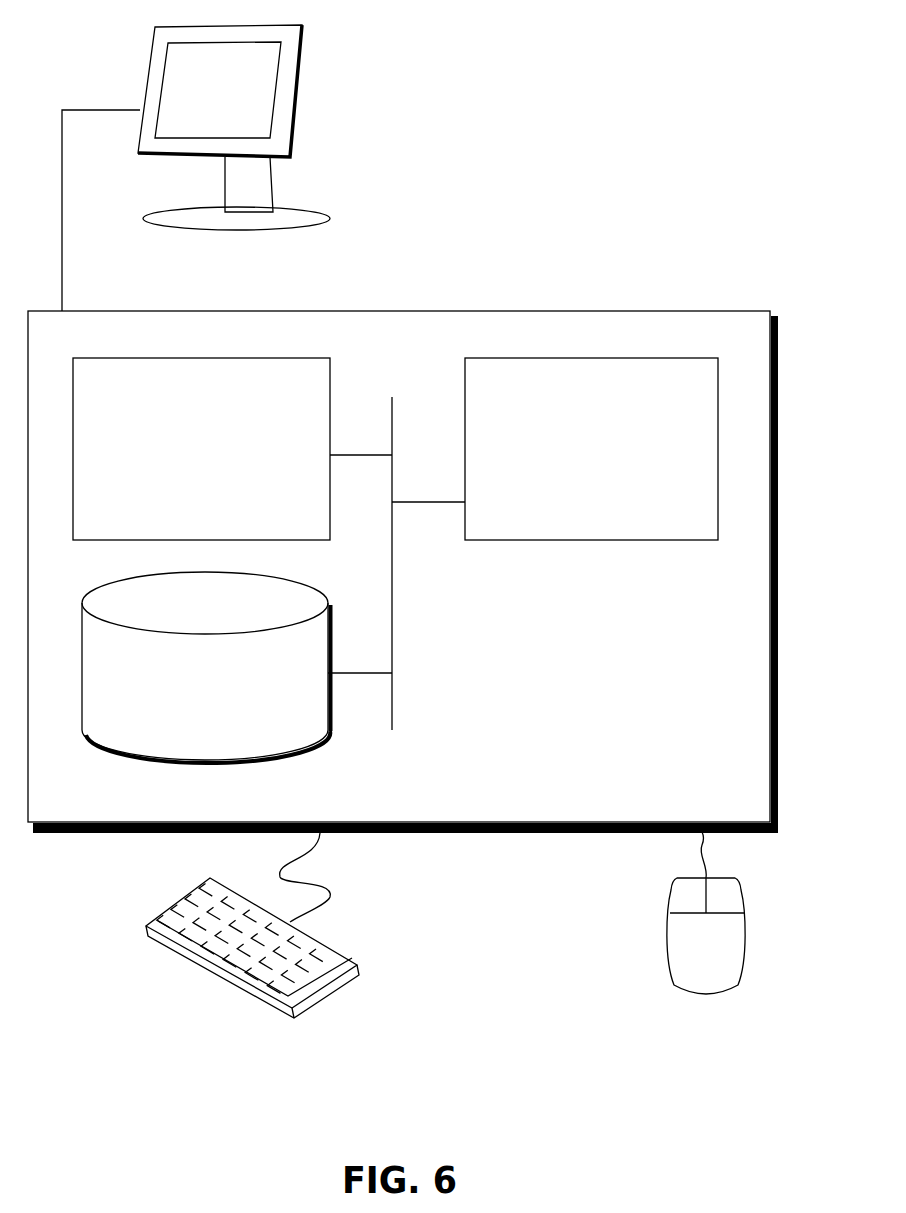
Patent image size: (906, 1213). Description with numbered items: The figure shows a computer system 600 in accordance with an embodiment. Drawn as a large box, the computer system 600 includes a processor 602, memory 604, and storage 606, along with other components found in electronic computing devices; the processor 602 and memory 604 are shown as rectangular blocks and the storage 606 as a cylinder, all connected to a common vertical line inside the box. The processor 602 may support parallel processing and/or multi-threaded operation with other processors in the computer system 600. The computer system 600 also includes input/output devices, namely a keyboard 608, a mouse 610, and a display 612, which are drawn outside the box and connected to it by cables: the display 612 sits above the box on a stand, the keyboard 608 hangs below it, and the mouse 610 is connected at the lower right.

The computer system 600 is at (452, 287).
The processor 602 is at (621, 460).
The memory 604 is at (226, 460).
The storage 606 is at (234, 700).
The keyboard 608 is at (168, 948).
The mouse 610 is at (730, 957).
The display 612 is at (196, 168).